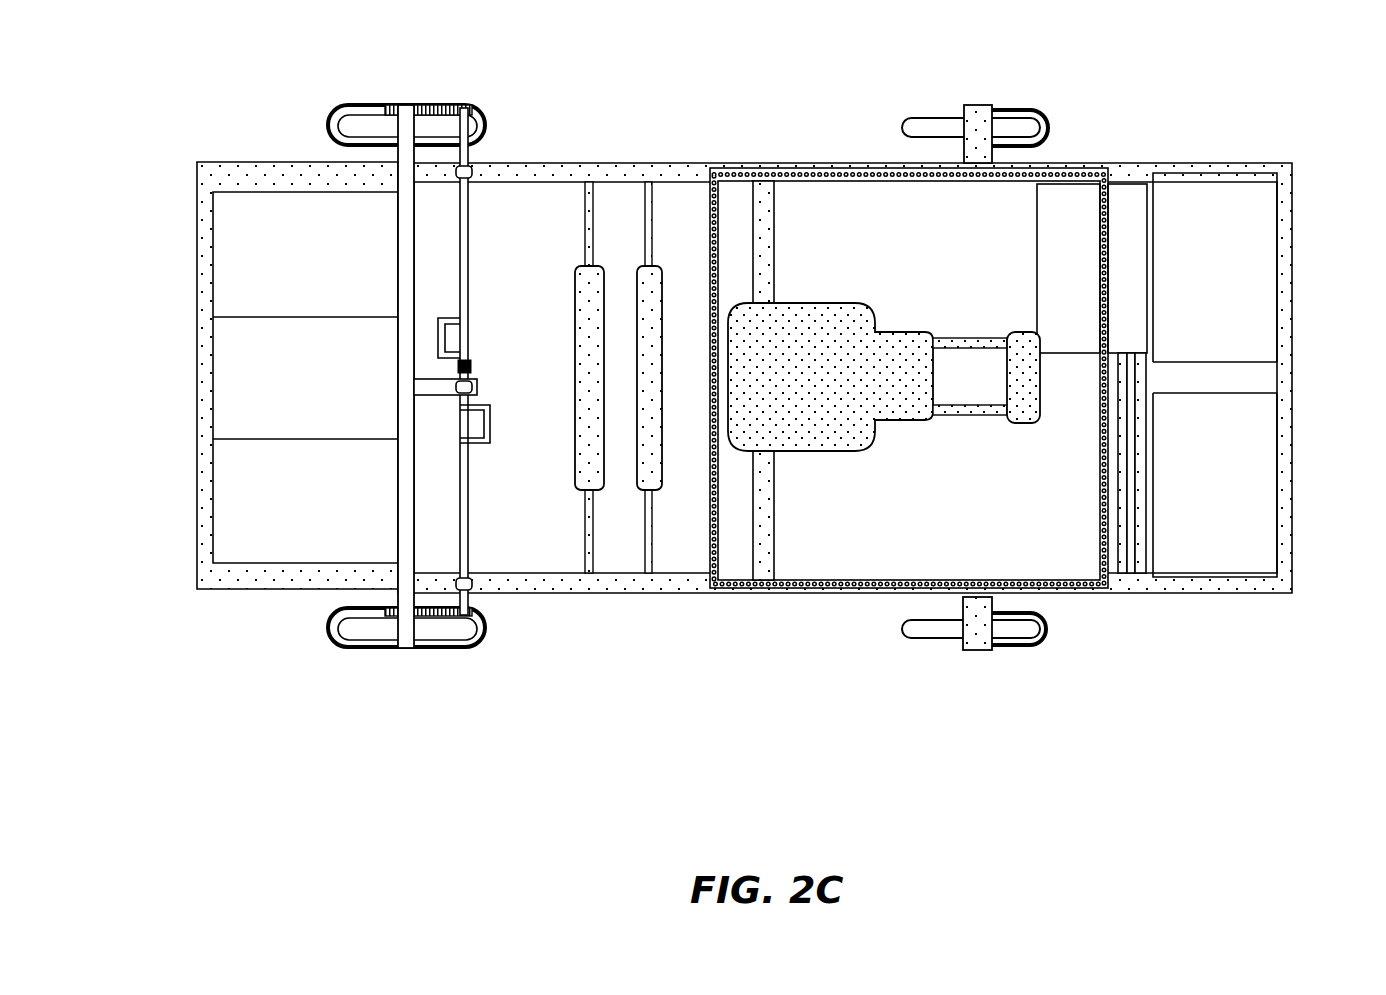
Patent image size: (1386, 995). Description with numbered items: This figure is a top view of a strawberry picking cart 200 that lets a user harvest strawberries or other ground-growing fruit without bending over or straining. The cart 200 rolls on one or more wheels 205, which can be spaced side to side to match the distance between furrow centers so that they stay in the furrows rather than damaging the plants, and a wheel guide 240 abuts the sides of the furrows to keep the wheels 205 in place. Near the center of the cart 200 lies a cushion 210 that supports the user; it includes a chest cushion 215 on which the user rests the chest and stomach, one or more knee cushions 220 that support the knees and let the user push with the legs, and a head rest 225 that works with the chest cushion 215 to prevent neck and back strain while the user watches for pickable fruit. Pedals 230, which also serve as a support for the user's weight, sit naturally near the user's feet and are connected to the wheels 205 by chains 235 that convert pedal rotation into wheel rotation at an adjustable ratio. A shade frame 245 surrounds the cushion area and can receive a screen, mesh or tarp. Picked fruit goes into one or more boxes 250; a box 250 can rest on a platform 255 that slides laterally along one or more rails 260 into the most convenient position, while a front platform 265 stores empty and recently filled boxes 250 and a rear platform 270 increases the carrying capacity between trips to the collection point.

The strawberry picking cart 200 is at (212, 92).
The wheels 205 is at (433, 641).
The cushion 210 is at (816, 382).
The chest cushion 215 is at (795, 453).
The knee cushions 220 is at (656, 486).
The head rest 225 is at (1012, 421).
The pedals 230 is at (484, 455).
The chains 235 is at (478, 624).
The wheel guide 240 is at (388, 651).
The shade frame 245 is at (745, 168).
The boxes 250 is at (268, 258).
The platform 255 is at (1127, 194).
The rails 260 is at (1125, 575).
The front platform 265 is at (1243, 376).
The rear platform 270 is at (300, 598).